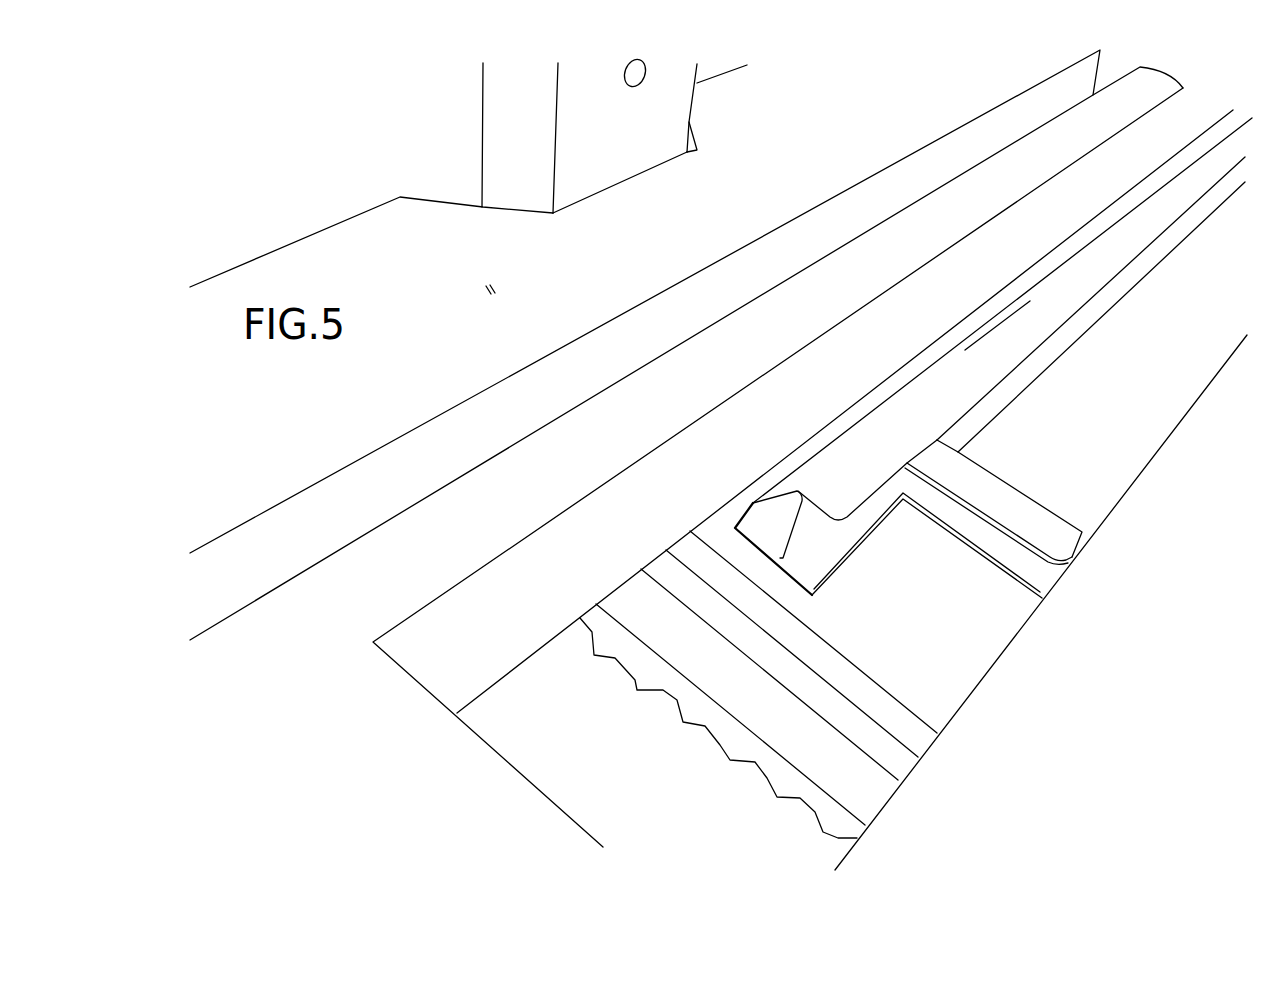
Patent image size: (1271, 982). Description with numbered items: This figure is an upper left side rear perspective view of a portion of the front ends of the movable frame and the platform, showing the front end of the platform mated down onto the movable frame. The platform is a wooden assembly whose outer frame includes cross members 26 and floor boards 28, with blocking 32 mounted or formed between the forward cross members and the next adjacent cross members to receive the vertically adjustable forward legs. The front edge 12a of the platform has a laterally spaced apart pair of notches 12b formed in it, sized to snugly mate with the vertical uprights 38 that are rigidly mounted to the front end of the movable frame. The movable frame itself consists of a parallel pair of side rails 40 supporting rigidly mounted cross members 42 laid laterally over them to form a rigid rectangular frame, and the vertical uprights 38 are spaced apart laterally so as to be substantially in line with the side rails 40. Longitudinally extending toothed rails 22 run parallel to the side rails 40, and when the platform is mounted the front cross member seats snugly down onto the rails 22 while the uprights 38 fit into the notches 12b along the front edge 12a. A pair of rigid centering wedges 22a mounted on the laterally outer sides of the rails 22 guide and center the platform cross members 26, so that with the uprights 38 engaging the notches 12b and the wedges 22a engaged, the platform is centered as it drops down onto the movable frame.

The front edge 12a is at (337, 207).
The notches 12b is at (698, 137).
The toothed rails 22 is at (680, 725).
The centering wedges 22a is at (925, 407).
The cross members 26 is at (985, 175).
The floor boards 28 is at (479, 282).
The blocking 32 is at (398, 692).
The vertical uprights 38 is at (488, 111).
The side rails 40 is at (715, 632).
The cross members 42 is at (1073, 345).